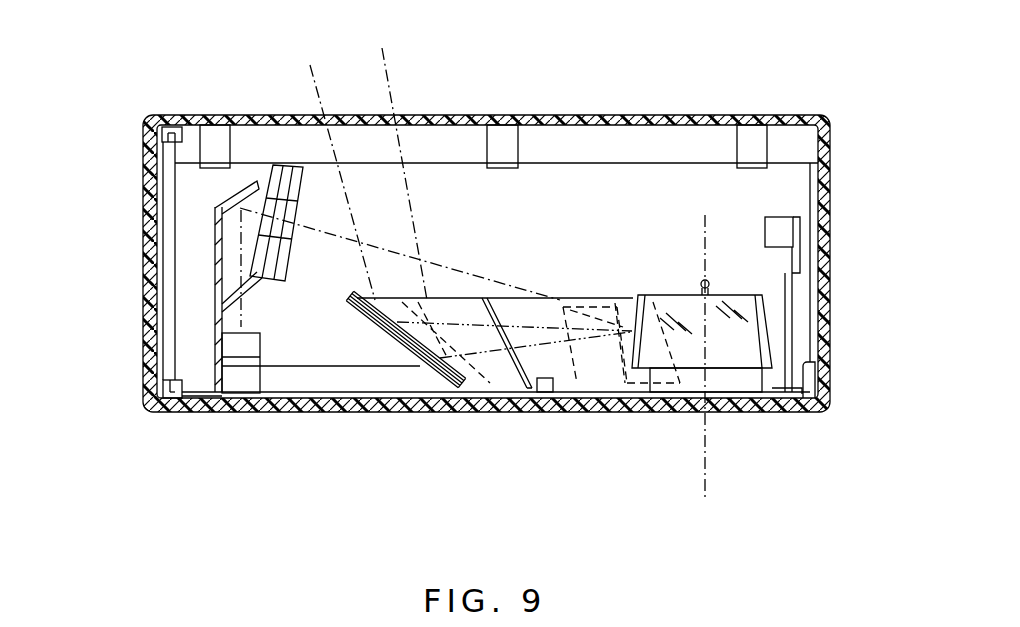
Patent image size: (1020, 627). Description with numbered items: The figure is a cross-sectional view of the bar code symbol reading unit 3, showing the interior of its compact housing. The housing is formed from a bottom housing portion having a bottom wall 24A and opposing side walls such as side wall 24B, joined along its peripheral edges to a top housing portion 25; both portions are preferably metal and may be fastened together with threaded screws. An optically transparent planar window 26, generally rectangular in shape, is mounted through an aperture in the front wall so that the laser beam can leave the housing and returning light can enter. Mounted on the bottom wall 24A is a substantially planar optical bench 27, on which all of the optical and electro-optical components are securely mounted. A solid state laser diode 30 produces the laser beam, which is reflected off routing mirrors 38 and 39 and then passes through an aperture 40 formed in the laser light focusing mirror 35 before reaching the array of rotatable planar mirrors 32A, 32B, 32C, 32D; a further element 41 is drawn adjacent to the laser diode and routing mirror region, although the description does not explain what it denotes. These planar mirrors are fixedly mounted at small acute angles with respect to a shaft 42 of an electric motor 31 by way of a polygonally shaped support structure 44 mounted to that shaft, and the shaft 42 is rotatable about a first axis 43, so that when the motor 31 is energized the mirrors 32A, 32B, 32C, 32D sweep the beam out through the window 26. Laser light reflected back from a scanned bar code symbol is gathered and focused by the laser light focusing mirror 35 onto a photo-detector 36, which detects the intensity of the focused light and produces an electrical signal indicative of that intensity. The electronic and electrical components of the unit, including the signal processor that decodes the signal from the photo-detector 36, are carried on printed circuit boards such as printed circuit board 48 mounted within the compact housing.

The bar code symbol reading unit 3 is at (762, 78).
The top housing portion 25 is at (832, 177).
The bottom wall 24A is at (145, 365).
The side wall 24B is at (832, 280).
The optically transparent planar window 26 is at (255, 116).
The optical bench 27 is at (318, 388).
The solid state laser diode 30 is at (240, 392).
The electric motor 31 is at (727, 380).
The rotatable planar mirror 32A is at (632, 312).
The rotatable planar mirror 32B is at (680, 313).
The rotatable planar mirror 32C is at (752, 348).
The rotatable planar mirror 32D is at (805, 355).
The laser light focusing mirror 35 is at (305, 182).
The photo-detector 36 is at (787, 228).
The routing mirror 38 is at (253, 342).
The routing mirror 39 is at (237, 213).
The aperture 40 is at (280, 228).
The support arm 41 is at (215, 276).
The shaft 42 is at (708, 283).
The first axis 43 is at (708, 495).
The polygonally shaped support structure 44 is at (765, 313).
The printed circuit board 48 is at (172, 320).